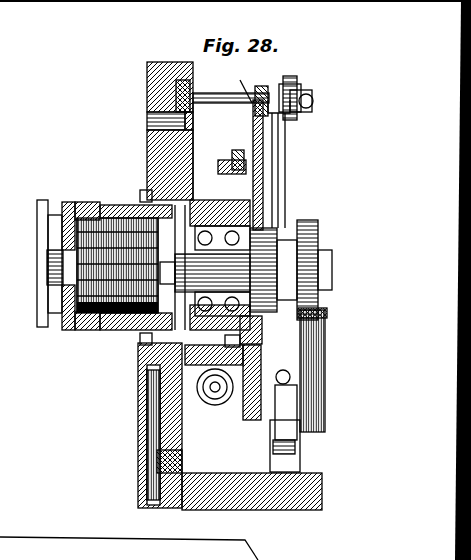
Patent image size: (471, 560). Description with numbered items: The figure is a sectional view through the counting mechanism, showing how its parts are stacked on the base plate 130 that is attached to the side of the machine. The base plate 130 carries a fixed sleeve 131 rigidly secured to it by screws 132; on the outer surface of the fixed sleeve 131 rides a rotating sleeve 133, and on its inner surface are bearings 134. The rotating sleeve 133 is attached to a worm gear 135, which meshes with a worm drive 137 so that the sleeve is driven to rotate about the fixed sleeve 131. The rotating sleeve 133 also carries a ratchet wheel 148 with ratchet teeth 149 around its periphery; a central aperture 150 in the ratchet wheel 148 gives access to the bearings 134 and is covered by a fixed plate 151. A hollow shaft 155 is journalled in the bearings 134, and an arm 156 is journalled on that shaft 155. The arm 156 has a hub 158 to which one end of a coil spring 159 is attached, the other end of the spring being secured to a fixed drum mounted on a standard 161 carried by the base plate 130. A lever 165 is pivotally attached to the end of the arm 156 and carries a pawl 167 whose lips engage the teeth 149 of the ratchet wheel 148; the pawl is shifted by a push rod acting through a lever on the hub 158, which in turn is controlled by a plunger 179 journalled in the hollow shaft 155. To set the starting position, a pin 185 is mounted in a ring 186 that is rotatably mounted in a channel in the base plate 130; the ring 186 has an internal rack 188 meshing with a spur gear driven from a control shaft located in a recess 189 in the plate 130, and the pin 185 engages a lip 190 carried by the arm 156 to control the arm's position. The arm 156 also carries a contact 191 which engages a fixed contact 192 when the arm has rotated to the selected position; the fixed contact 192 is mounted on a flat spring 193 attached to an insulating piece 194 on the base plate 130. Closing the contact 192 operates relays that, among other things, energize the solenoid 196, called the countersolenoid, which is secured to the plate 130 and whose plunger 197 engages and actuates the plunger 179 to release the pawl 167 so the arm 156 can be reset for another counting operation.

The base plate 130 is at (162, 156).
The fixed sleeve 131 is at (212, 212).
The screws 132 is at (142, 194).
The rotating sleeve 133 is at (222, 168).
The bearings 134 is at (215, 190).
The worm gear 135 is at (258, 200).
The worm drive 137 is at (214, 395).
The ratchet wheel 148 is at (262, 338).
The ratchet teeth 149 is at (250, 100).
The central aperture 150 is at (252, 330).
The fixed plate 151 is at (284, 172).
The hollow shaft 155 is at (265, 216).
The arm 156 is at (286, 140).
The hub 158 is at (276, 240).
The coil spring 159 is at (312, 230).
The standard 161 is at (310, 354).
The lever 165 is at (296, 90).
The pawl 167 is at (297, 80).
The plunger 179 is at (142, 369).
The pin 185 is at (208, 93).
The ring 186 is at (182, 95).
The internal rack 188 is at (149, 66).
The recess 189 is at (150, 121).
The lip 190 is at (261, 86).
The contact 191 is at (318, 98).
The fixed contact 192 is at (294, 370).
The flat spring 193 is at (286, 464).
The insulating piece 194 is at (283, 470).
The solenoid 196 is at (90, 330).
The plunger 197 is at (56, 298).